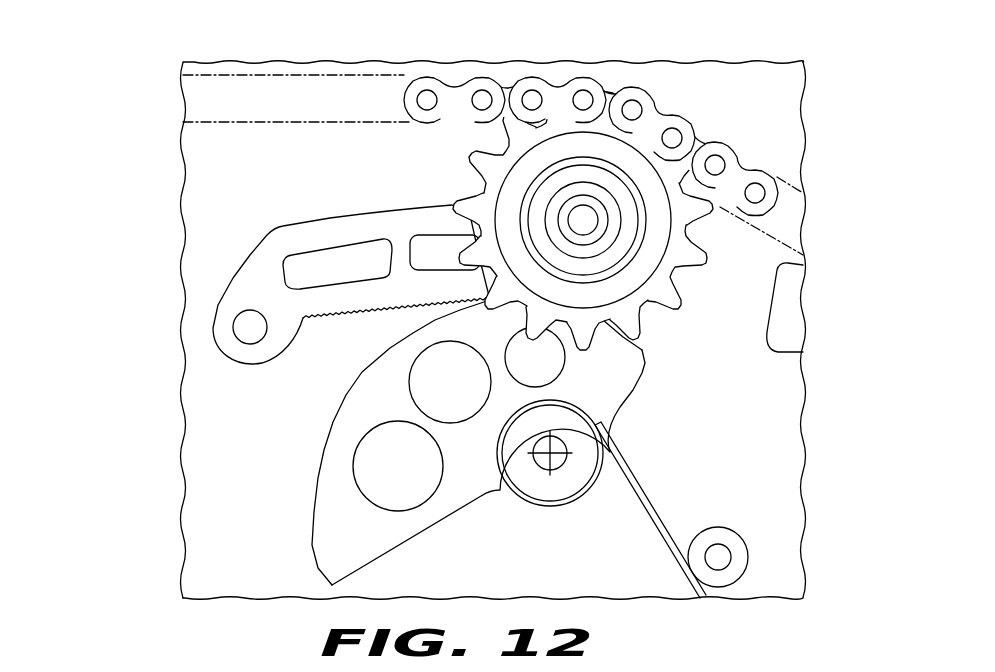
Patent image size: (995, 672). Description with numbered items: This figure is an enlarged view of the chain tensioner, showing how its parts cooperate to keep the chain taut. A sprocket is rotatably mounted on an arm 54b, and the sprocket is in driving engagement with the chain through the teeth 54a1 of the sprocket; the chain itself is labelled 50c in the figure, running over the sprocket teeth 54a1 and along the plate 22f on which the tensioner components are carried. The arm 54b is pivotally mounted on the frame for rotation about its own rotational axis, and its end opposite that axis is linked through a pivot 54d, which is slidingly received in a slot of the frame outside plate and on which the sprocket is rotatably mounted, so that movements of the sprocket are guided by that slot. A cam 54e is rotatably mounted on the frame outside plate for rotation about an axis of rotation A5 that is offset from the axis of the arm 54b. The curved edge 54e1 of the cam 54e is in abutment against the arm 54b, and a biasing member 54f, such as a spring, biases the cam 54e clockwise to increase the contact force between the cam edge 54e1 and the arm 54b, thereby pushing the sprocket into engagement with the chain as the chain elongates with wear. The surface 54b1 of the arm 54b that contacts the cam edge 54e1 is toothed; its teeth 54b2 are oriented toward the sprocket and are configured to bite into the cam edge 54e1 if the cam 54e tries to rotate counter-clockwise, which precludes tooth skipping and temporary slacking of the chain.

The arm 54b is at (256, 217).
The pivot 54d is at (603, 190).
The chain 50c is at (797, 173).
The teeth of the sprocket 54a1 is at (712, 270).
The surface of the arm 54b1 is at (355, 322).
The teeth of the arm 54b2 is at (255, 335).
The curved edge of the cam 54e1 is at (330, 430).
The cam 54e is at (347, 441).
The housing plate 22f is at (698, 383).
The biasing member 54f is at (630, 452).
The axis of rotation A5 is at (551, 457).